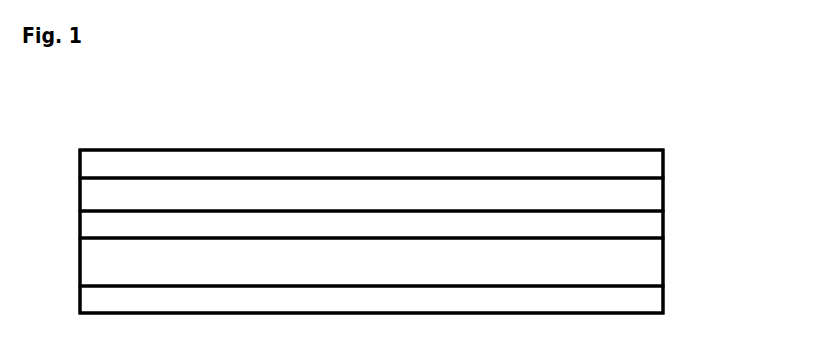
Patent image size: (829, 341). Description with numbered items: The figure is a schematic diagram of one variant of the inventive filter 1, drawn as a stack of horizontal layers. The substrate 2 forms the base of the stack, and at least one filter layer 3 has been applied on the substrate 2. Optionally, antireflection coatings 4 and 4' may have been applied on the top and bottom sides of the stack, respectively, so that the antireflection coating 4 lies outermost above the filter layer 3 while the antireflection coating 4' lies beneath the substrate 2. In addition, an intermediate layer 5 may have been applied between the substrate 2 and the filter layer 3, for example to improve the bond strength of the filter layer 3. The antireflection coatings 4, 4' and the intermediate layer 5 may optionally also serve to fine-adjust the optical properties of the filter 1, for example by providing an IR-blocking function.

The filter 1 is at (433, 231).
The substrate 2 is at (371, 262).
The filter layer 3 is at (371, 194).
The antireflection coating 4 is at (371, 164).
The antireflection coating 4' is at (371, 299).
The intermediate layer 5 is at (371, 224).